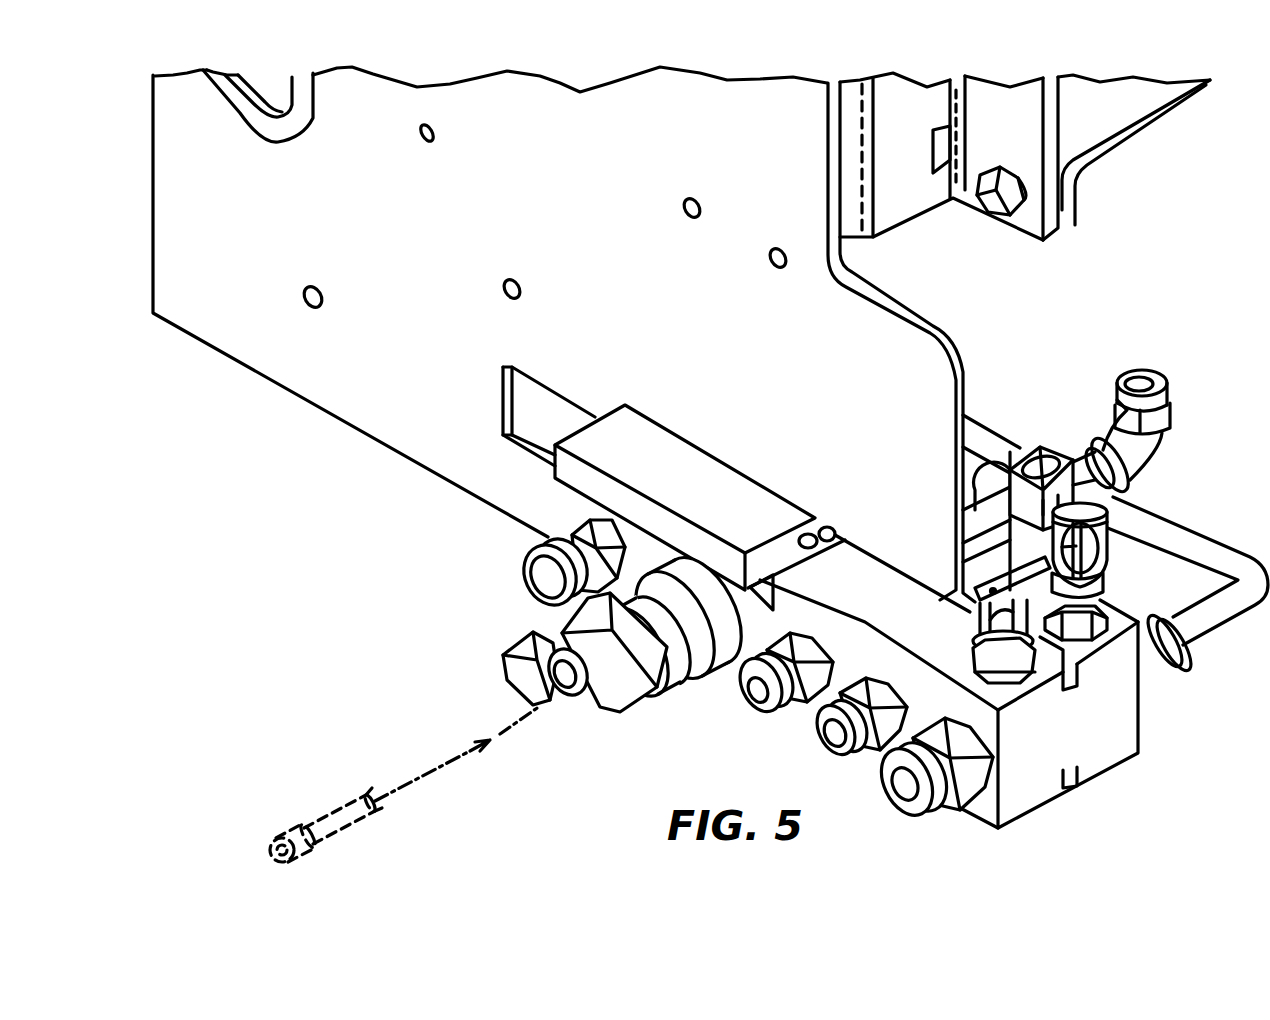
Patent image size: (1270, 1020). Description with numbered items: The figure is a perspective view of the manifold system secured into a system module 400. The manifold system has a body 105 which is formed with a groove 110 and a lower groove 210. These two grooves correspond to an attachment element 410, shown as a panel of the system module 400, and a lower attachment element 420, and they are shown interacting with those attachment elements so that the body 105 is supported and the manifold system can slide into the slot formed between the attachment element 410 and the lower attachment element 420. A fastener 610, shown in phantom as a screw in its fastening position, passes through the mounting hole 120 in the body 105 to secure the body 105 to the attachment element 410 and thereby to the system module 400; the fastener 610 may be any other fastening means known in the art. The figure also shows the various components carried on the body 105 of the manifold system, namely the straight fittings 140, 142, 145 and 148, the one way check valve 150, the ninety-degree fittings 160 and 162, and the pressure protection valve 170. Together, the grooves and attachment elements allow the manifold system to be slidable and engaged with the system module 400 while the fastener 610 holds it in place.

The body 105 is at (1113, 750).
The groove 110 is at (1078, 684).
The mounting hole 120 is at (722, 683).
The straight fitting 140 is at (530, 562).
The straight fitting 142 is at (748, 718).
The straight fitting 145 is at (822, 745).
The straight fitting 148 is at (913, 815).
The one way check valve 150 is at (613, 697).
The 90 degree fitting 160 is at (980, 636).
The 90 degree fitting 162 is at (1120, 497).
The pressure protection valve 170 is at (1050, 455).
The lower groove 210 is at (1070, 787).
The system module 400 is at (1065, 262).
The attachment element 410 is at (708, 348).
The lower attachment element 420 is at (505, 482).
The fastener 610 is at (823, 524).